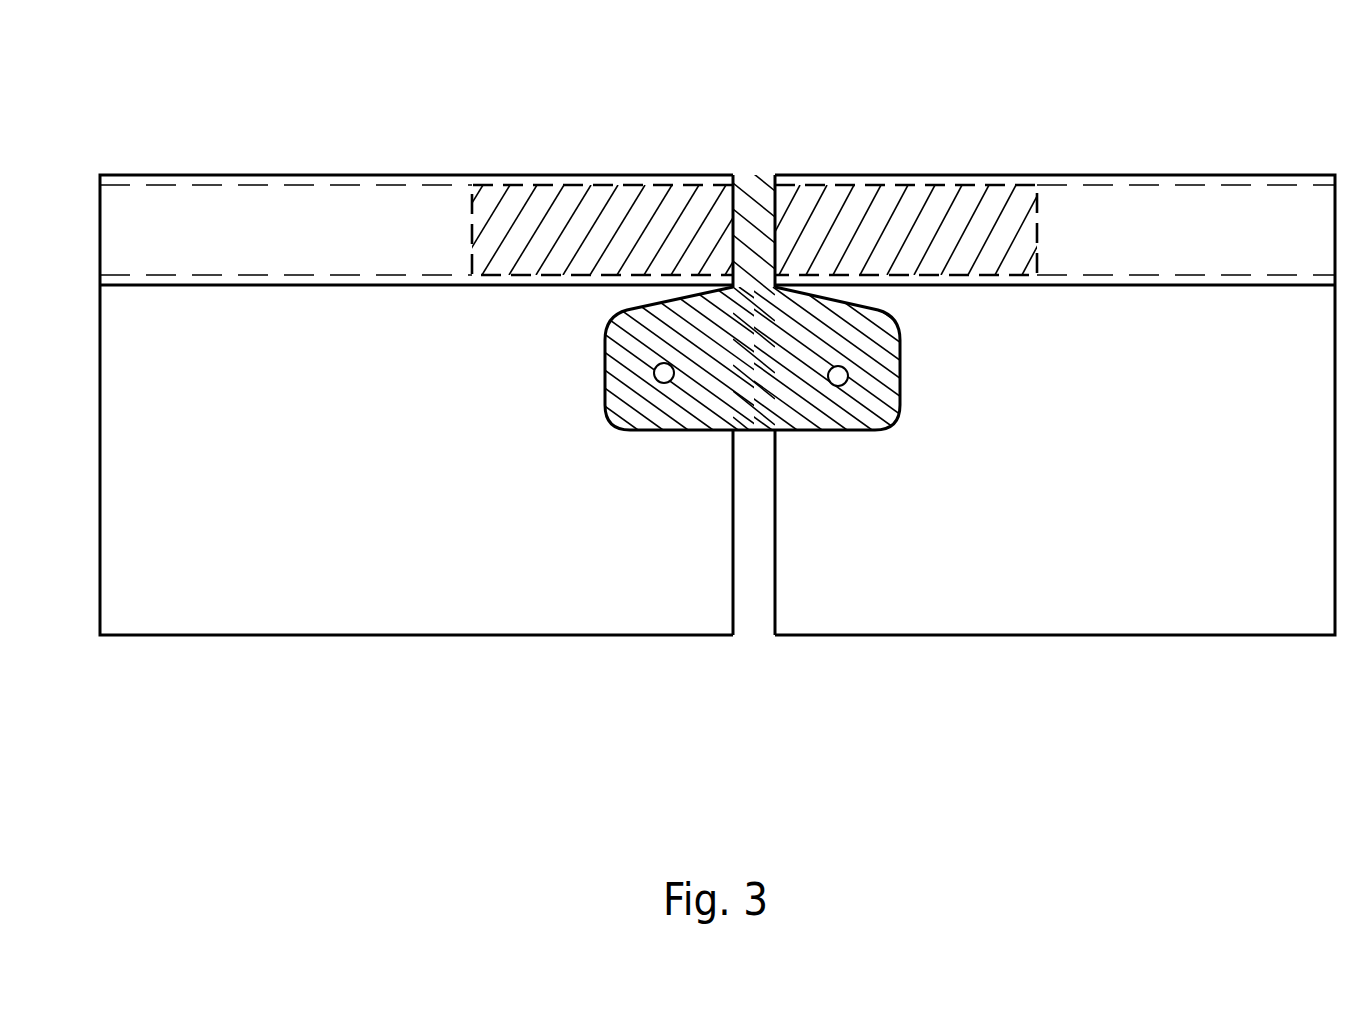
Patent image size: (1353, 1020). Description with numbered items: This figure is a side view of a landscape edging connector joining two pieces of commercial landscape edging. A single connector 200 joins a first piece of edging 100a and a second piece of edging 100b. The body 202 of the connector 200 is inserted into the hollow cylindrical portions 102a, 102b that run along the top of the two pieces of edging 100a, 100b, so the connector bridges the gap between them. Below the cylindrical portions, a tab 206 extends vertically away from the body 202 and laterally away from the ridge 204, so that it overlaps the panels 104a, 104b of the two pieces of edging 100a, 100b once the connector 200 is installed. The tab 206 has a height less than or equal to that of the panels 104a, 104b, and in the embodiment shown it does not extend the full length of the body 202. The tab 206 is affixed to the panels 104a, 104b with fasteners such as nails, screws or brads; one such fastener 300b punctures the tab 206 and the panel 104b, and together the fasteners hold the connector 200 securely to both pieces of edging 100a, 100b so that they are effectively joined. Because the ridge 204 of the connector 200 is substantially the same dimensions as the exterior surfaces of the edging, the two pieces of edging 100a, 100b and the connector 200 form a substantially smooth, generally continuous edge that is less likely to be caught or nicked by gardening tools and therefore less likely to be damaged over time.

The piece of commercial edging 100a is at (416, 343).
The piece of commercial edging 100b is at (1055, 347).
The hollow cylindrical portion 102a is at (175, 242).
The hollow cylindrical portion 102b is at (1293, 246).
The panel 104a is at (175, 613).
The panel 104b is at (1285, 613).
The connector 200 is at (743, 362).
The body 202 is at (911, 199).
The ridge 204 is at (604, 198).
The tab 206 is at (743, 389).
The fastener 300b is at (742, 353).